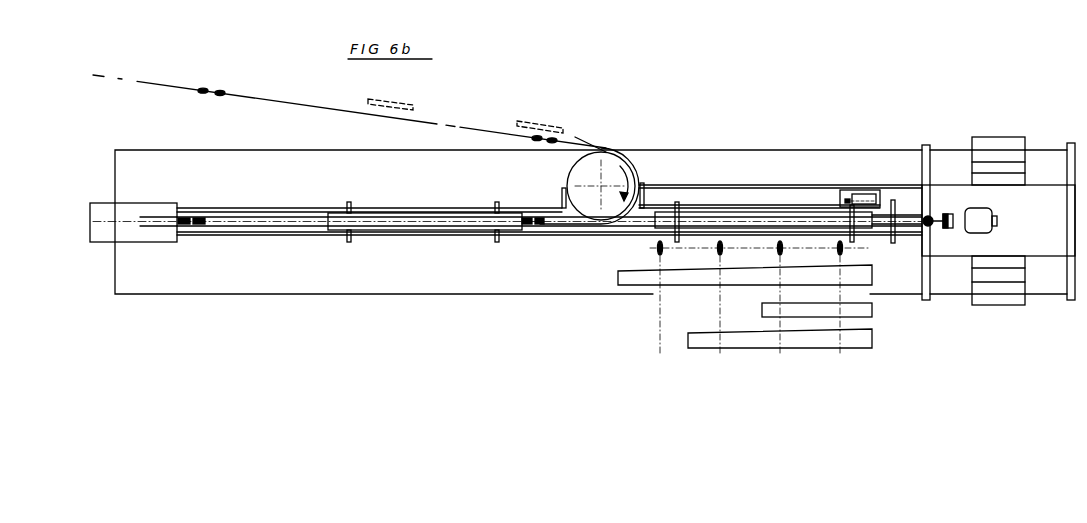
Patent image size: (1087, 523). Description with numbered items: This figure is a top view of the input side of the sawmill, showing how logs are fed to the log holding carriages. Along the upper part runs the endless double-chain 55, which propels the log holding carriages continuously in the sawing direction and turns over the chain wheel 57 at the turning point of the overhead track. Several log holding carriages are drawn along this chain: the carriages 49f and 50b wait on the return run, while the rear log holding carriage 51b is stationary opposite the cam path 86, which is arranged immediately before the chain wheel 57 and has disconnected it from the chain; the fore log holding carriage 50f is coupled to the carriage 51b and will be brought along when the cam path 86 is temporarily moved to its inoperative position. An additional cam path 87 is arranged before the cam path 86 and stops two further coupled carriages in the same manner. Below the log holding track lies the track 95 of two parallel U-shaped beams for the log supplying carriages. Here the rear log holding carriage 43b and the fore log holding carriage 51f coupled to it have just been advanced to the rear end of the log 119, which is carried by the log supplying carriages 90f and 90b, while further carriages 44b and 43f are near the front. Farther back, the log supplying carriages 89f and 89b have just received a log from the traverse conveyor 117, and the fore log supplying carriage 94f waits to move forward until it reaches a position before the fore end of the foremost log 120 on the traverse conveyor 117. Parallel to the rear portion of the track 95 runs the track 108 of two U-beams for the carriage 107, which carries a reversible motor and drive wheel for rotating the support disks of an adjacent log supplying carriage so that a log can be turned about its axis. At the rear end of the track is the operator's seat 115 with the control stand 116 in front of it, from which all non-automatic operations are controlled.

The endless double-chain 55 is at (163, 86).
The fore log holding carriage 49f is at (204, 94).
The rear log holding carriage 50b is at (221, 90).
The fore log holding carriage 50f is at (537, 142).
The rear log holding carriage 51b is at (552, 143).
The cam path 87 is at (403, 101).
The cam path 86 is at (532, 124).
The chain wheel 57 is at (601, 160).
The log 119 is at (415, 215).
The track 95 is at (457, 210).
The fore log supplying carriage 90f is at (350, 204).
The rear log supplying carriage 90b is at (503, 196).
The rear log holding carriage 44b is at (185, 228).
The fore log holding carriage 43f is at (199, 228).
The rear log holding carriage 43b is at (528, 228).
The fore log holding carriage 51f is at (543, 226).
The track 108 is at (745, 206).
The fore log supplying carriage 89f is at (679, 203).
The rear log supplying carriage 89b is at (849, 206).
The carriage 107 is at (850, 194).
The fore log supplying carriage 94f is at (895, 204).
The control stand 116 is at (947, 214).
The seat 115 is at (985, 212).
The traverse conveyor 117 is at (656, 247).
The log 120 is at (647, 274).